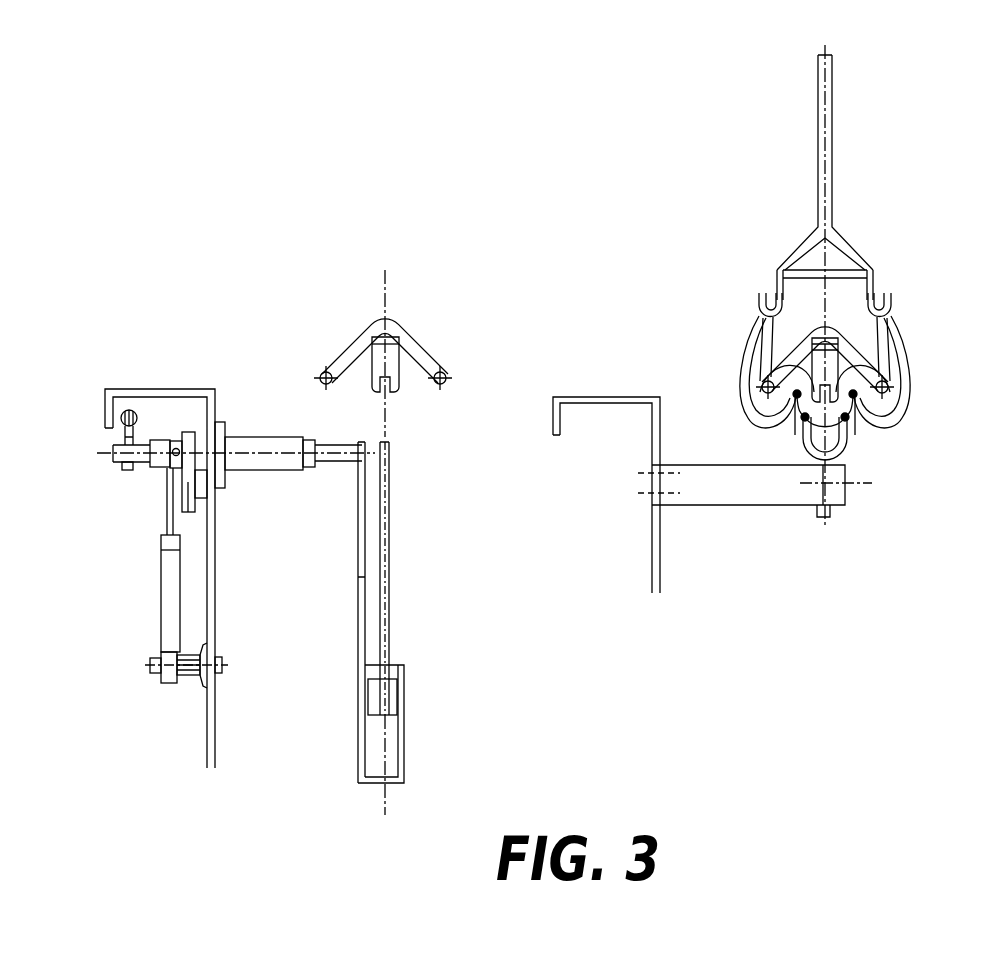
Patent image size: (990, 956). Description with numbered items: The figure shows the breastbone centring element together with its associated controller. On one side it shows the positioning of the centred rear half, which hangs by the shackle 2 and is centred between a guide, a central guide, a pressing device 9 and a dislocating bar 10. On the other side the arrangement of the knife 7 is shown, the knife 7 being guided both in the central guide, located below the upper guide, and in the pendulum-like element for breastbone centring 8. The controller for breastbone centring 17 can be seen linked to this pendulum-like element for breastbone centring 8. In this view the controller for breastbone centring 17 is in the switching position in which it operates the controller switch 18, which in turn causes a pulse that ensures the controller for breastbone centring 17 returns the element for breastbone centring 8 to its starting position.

The shackle 2 is at (832, 143).
The knife 7 is at (387, 515).
The element for breastbone centring 8 is at (404, 683).
The pressing device 9 is at (847, 419).
The dislocating bar 10 is at (856, 394).
The controller for breastbone centring 17 is at (168, 500).
The controller switch 18 is at (138, 418).